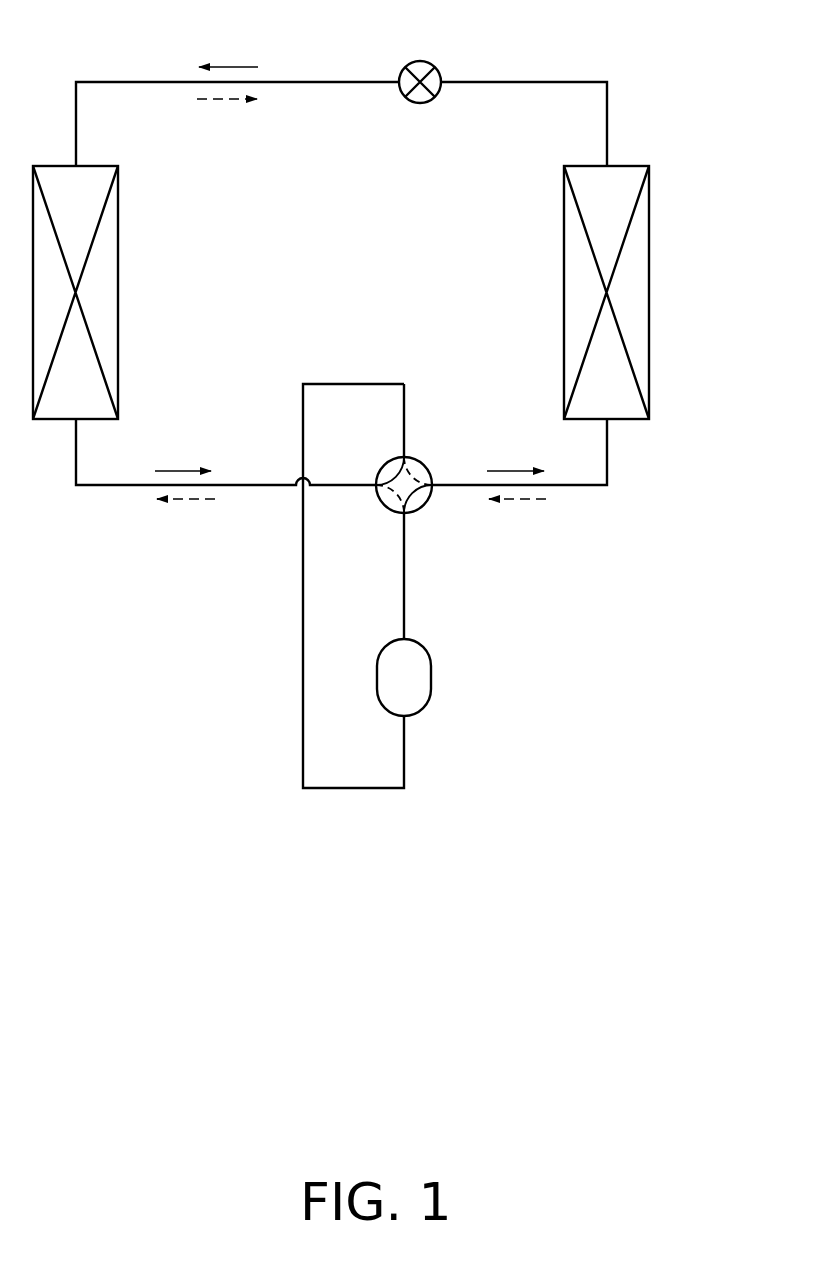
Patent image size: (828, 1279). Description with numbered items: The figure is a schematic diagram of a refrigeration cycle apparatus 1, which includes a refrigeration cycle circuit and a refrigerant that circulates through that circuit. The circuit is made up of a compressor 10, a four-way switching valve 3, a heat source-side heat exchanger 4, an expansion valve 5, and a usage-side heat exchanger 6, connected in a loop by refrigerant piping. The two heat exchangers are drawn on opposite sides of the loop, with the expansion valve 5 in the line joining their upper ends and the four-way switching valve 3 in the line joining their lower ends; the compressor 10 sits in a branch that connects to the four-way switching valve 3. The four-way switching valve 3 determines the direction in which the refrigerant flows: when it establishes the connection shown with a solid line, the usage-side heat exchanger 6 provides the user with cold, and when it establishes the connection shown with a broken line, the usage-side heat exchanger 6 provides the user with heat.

The refrigeration cycle apparatus 1 is at (174, 676).
The four-way switching valve 3 is at (424, 466).
The heat source-side heat exchanger 4 is at (649, 265).
The expansion valve 5 is at (424, 61).
The usage-side heat exchanger 6 is at (118, 265).
The compressor 10 is at (431, 677).